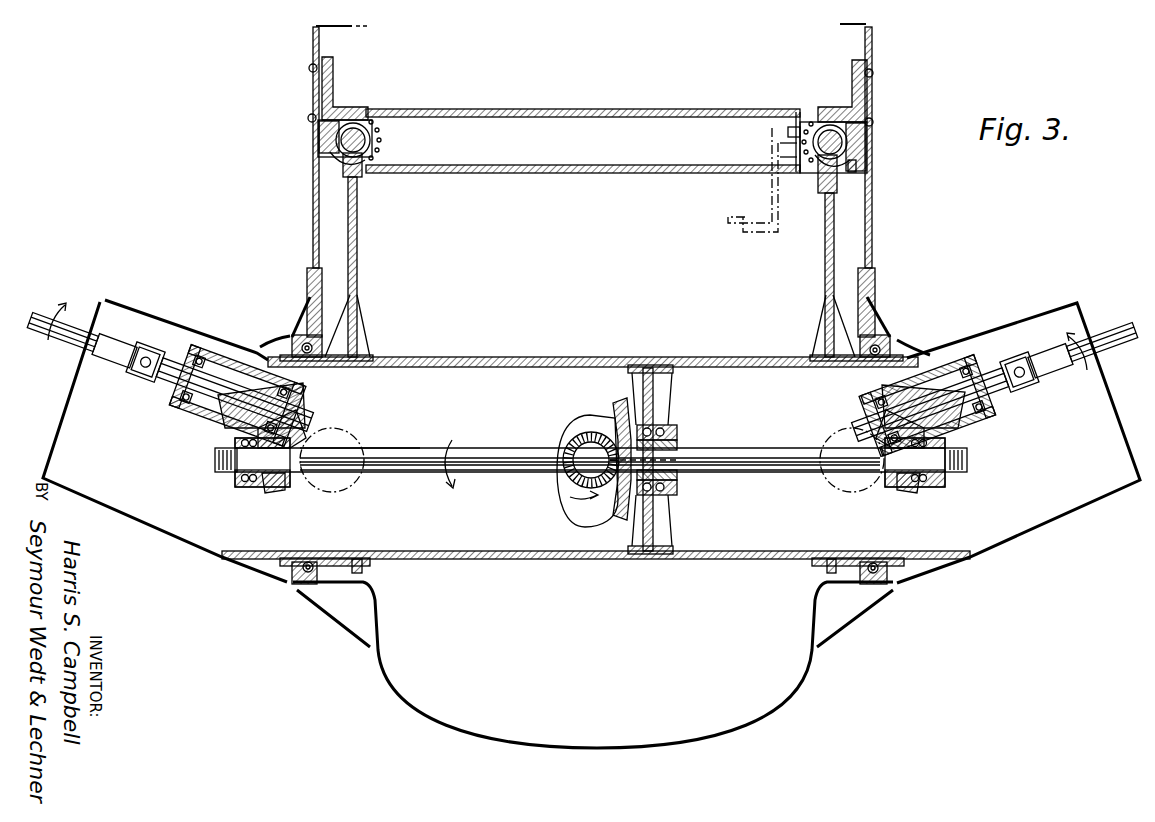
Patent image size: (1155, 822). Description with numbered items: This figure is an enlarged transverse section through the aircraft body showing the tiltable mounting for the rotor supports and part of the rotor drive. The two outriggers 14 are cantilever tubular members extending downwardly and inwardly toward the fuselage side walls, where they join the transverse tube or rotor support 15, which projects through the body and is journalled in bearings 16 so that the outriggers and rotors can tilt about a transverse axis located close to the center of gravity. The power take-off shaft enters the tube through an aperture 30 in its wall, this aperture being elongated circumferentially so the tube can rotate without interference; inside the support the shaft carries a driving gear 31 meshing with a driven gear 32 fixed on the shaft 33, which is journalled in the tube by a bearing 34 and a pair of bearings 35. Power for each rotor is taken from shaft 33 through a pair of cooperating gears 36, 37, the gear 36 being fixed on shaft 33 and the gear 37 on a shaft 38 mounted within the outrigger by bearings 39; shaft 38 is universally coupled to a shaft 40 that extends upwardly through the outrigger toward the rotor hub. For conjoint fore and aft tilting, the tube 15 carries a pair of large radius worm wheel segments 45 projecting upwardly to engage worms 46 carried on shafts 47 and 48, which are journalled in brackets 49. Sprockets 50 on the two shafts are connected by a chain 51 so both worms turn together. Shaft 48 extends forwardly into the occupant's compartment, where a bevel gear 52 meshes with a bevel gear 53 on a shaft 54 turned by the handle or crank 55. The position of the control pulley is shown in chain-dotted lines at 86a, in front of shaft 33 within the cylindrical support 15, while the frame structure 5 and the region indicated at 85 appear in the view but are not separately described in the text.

The frame 5 is at (312, 212).
The outrigger 14 is at (138, 530).
The transverse tube 15 is at (436, 358).
The bearings 16 is at (306, 330).
The aperture 30 is at (566, 498).
The driving gear 31 is at (588, 426).
The driven gear 32 is at (620, 508).
The shaft 33 is at (754, 452).
The bearing 34 is at (672, 432).
The bearings 35 is at (242, 485).
The gear 36 is at (905, 488).
The gear 37 is at (882, 396).
The shaft 38 is at (1020, 372).
The bearings 39 is at (975, 345).
The shaft 40 is at (1127, 330).
The worm wheel segments 45 is at (357, 241).
The worms 46 is at (368, 135).
The shaft 47 is at (376, 116).
The shaft 48 is at (828, 130).
The brackets 49 is at (333, 108).
The sprockets 50 is at (376, 145).
The chain 51 is at (548, 110).
The bevel gear 52 is at (852, 172).
The bevel gear 53 is at (800, 122).
The shaft 54 is at (790, 133).
The handle or crank 55 is at (745, 234).
The worm wheel 85 is at (324, 428).
The pulley position 86a is at (362, 448).